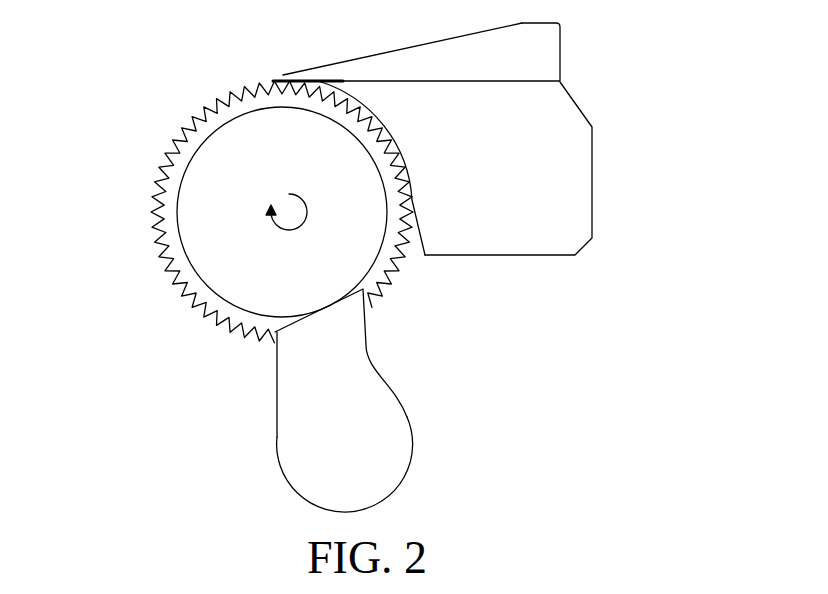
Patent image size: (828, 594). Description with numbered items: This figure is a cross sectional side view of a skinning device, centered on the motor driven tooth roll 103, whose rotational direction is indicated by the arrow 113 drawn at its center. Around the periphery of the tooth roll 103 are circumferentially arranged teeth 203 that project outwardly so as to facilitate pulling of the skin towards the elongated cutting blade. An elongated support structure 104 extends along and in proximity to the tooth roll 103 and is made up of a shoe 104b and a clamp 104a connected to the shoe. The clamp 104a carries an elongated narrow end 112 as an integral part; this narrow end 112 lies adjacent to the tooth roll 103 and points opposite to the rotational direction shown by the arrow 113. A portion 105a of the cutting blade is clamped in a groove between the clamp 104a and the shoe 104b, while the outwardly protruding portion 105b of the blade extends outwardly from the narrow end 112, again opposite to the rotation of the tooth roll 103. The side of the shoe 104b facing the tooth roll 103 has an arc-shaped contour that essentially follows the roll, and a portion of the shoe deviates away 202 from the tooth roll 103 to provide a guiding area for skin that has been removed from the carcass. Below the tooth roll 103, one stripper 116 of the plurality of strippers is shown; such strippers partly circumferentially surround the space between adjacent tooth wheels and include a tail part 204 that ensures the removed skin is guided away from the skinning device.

The tooth roll 103 is at (238, 212).
The teeth 203 is at (153, 213).
The outwardly protruding portion 105b is at (270, 108).
The arrow 113 is at (300, 233).
The elongated narrow end 112 is at (283, 77).
The support structure 104 is at (476, 176).
The clamp 104a is at (421, 52).
The shoe 104b is at (455, 210).
The portion of the cutting blade 105a is at (335, 64).
The deviation away from the tooth roll 202 is at (410, 250).
The stripper 116 is at (392, 400).
The tail part 204 is at (418, 425).